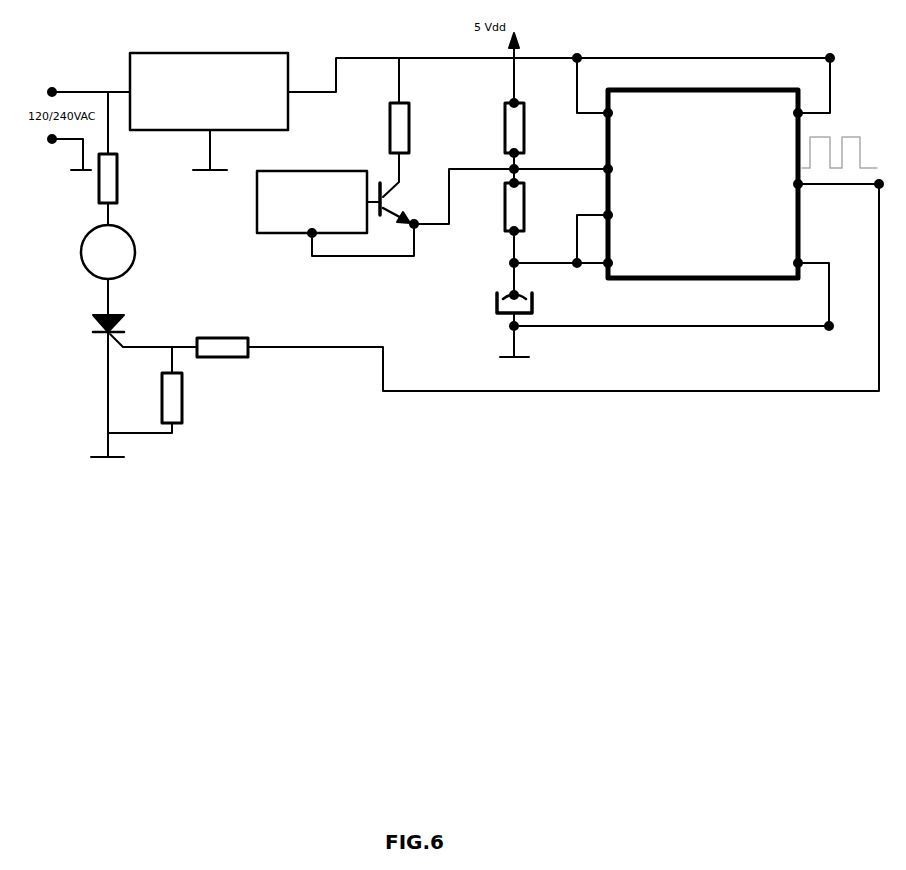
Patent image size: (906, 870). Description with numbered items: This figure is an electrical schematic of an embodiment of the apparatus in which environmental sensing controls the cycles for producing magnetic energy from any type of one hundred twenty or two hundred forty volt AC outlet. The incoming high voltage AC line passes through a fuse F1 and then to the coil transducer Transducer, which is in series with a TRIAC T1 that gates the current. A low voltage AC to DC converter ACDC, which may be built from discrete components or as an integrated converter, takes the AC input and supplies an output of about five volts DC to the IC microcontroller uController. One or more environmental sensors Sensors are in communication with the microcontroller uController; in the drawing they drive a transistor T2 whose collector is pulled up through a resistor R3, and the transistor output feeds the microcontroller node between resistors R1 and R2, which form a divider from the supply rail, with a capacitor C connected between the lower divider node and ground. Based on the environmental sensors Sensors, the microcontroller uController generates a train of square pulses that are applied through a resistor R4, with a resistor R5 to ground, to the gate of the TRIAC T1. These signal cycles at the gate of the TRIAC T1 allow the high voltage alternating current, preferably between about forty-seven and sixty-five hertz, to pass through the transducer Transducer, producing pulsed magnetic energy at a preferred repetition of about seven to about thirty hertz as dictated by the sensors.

The fuse F1 is at (118, 178).
The TRIAC T1 is at (117, 322).
The transistor T2 is at (388, 196).
The resistor R1 is at (500, 128).
The resistor R2 is at (500, 207).
The resistor R3 is at (383, 128).
The resistor R4 is at (222, 339).
The resistor R5 is at (181, 398).
The capacitor C is at (497, 302).
The transducer Transducer is at (140, 252).
The AC to DC converter ACDC is at (209, 91).
The environmental sensors Sensors is at (312, 202).
The IC microcontroller uController is at (703, 184).